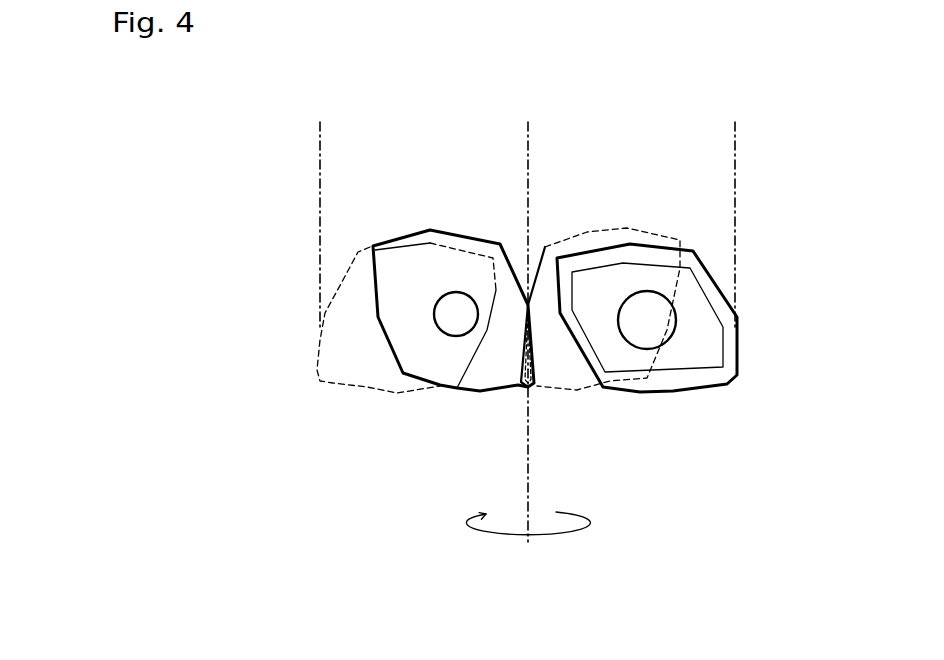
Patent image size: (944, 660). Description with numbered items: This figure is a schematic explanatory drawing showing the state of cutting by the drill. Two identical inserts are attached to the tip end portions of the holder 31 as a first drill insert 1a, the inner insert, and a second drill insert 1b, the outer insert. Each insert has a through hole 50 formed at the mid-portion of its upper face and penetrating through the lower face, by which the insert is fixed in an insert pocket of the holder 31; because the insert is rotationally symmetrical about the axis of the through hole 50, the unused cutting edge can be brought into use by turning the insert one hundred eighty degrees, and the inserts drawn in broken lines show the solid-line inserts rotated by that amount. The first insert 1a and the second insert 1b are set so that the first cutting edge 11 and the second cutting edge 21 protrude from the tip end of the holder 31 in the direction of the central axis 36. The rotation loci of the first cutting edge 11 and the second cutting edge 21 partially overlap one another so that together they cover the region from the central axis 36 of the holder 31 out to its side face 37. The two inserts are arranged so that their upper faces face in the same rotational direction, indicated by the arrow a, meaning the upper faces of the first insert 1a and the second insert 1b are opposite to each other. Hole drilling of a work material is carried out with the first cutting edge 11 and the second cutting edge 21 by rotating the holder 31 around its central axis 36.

The first drill insert 1a is at (430, 229).
The second drill insert 1b is at (343, 282).
The first cutting edge 11 is at (475, 393).
The second cutting edge 21 is at (668, 393).
The holder 31 is at (318, 190).
The central axis 36 is at (528, 421).
The side face 37 is at (527, 226).
The through hole 50 is at (450, 318).
The arrow a is at (517, 523).